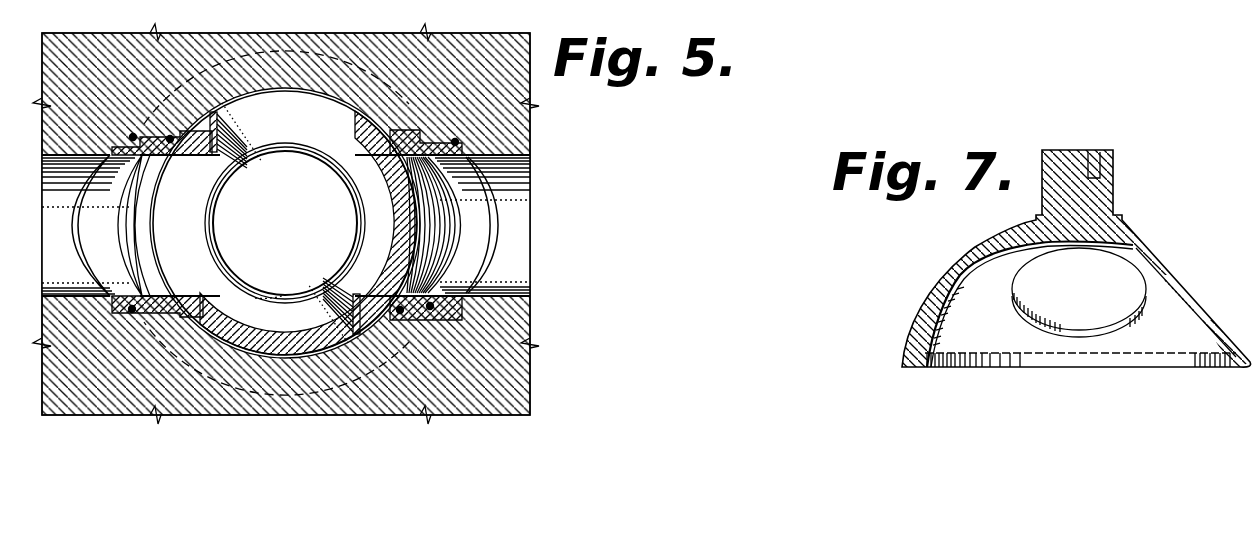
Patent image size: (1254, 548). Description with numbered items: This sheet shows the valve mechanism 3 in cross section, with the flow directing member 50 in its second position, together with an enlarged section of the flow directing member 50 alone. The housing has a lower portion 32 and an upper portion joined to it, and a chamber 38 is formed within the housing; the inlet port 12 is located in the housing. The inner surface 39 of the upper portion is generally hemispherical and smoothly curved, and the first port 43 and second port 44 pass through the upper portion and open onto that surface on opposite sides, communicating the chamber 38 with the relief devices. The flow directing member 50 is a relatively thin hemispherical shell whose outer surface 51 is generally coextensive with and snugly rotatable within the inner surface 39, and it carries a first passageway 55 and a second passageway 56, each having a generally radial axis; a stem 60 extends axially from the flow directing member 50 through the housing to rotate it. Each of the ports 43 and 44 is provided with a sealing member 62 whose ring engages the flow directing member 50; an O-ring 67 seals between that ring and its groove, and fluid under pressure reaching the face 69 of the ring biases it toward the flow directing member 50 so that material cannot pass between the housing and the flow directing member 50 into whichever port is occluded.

In FIG. 5, the valve mechanism 3 is at (542, 229).
In FIG. 5, the inlet port 12 is at (310, 160).
In FIG. 5, the housing lower portion 32 is at (360, 178).
In FIG. 5, the chamber 38 is at (300, 300).
In FIG. 5, the inner surface 39 is at (188, 152).
In FIG. 5, the first port 43 is at (118, 261).
In FIG. 5, the second port 44 is at (484, 276).
In FIG. 5, the flow directing member 50 is at (284, 358).
In FIG. 7, the flow directing member 50 is at (915, 319).
In FIG. 5, the outer surface 51 is at (448, 224).
In FIG. 7, the outer surface 51 is at (954, 276).
In FIG. 5, the first passageway 55 is at (126, 222).
In FIG. 7, the first passageway 55 is at (1106, 333).
In FIG. 5, the second passageway 56 is at (240, 50).
In FIG. 7, the second passageway 56 is at (1200, 298).
In FIG. 7, the stem 60 is at (1115, 186).
In FIG. 5, the sealing member 62 is at (172, 137).
In FIG. 5, the O-ring 67 is at (452, 128).
In FIG. 5, the face of the ring 69 is at (166, 322).